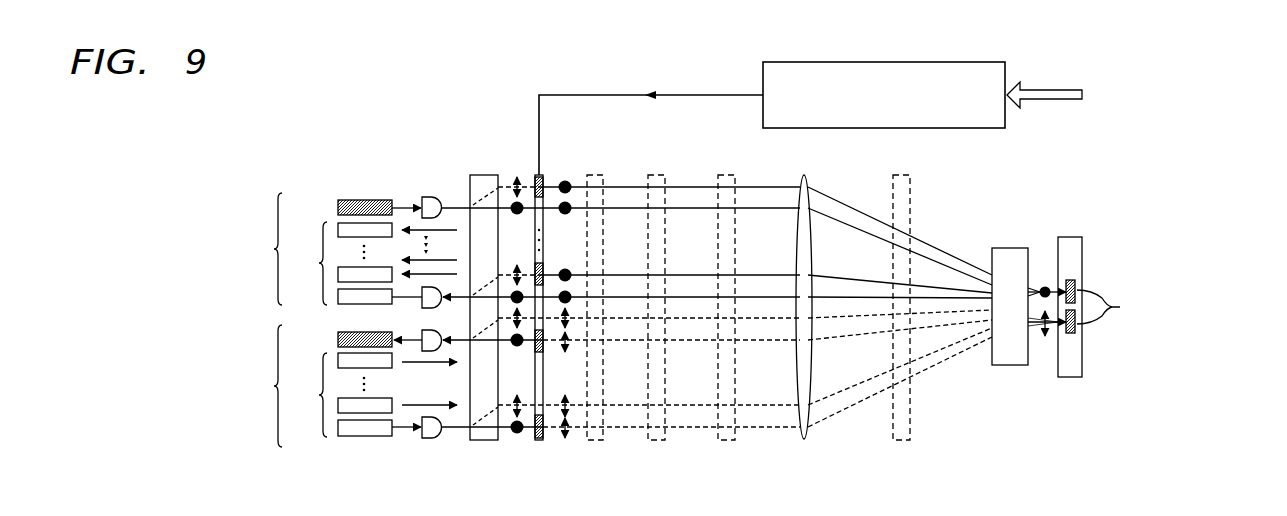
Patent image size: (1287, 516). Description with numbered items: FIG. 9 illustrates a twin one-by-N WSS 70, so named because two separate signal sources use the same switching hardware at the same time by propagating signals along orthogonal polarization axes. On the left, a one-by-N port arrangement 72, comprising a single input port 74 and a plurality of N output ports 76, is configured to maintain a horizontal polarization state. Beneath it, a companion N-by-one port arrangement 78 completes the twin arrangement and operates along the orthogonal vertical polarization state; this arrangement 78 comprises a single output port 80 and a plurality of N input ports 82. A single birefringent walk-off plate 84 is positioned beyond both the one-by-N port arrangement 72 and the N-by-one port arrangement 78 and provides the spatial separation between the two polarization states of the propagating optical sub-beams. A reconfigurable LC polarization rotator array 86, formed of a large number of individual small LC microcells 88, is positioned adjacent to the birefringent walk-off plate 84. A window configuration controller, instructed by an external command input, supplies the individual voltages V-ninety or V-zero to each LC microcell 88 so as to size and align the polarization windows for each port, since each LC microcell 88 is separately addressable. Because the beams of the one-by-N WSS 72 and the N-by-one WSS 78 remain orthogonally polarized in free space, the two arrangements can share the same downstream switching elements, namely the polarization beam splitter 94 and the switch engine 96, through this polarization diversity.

The twin 1×N WSS 70 is at (196, 162).
The 1×N port arrangement 72 is at (312, 213).
The single input port 74 is at (364, 198).
The plurality of N output ports 76 is at (340, 263).
The N×1 port arrangement 78 is at (312, 386).
The single output port 80 is at (337, 340).
The plurality of N input ports 82 is at (340, 395).
The birefringent walk-off plate 84 is at (485, 173).
The reconfigurable LC polarization rotator array 86 is at (557, 462).
The LC microcell 88 is at (537, 370).
The polarization beam splitter 94 is at (1013, 247).
The switch engine 96 is at (1083, 247).